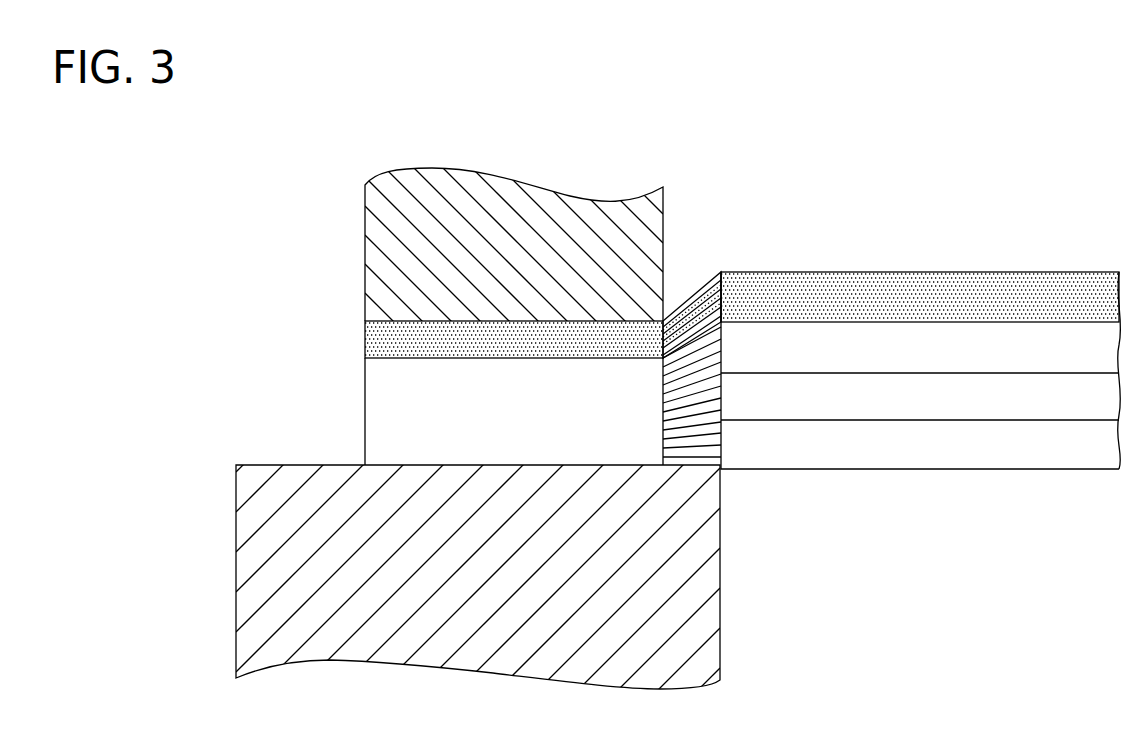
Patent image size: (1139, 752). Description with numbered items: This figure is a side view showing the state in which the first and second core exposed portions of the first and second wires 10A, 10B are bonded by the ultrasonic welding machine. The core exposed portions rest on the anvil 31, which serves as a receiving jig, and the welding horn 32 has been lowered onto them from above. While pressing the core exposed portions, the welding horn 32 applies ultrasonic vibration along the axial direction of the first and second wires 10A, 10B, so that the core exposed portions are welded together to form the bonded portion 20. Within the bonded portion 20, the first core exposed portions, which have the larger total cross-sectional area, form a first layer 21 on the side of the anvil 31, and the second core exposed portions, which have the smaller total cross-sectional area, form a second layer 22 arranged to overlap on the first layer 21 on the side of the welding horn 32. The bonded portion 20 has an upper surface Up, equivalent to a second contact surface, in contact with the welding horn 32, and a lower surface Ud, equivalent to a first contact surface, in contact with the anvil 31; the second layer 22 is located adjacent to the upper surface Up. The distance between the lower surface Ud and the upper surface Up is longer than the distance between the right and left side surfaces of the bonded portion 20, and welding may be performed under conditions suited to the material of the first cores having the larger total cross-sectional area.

The first wire 10A is at (997, 455).
The second wire 10B is at (995, 292).
The bonded portion 20 is at (492, 368).
The first layer 21 is at (483, 411).
The second layer 22 is at (380, 340).
The anvil 31 is at (250, 508).
The welding horn 32 is at (372, 215).
The upper surface Up is at (536, 318).
The lower surface Ud is at (540, 466).